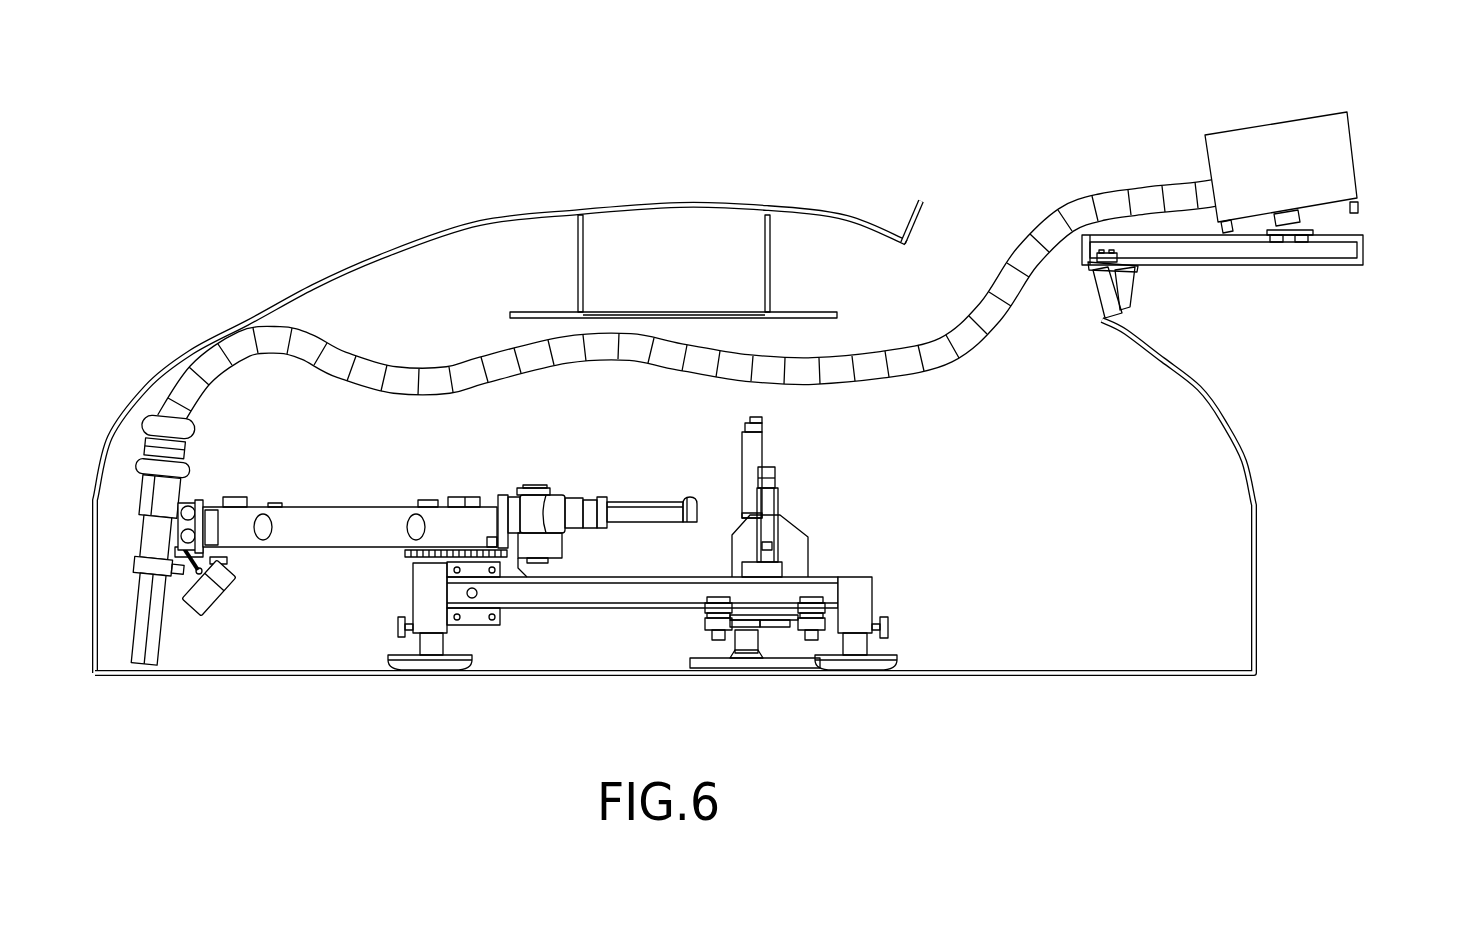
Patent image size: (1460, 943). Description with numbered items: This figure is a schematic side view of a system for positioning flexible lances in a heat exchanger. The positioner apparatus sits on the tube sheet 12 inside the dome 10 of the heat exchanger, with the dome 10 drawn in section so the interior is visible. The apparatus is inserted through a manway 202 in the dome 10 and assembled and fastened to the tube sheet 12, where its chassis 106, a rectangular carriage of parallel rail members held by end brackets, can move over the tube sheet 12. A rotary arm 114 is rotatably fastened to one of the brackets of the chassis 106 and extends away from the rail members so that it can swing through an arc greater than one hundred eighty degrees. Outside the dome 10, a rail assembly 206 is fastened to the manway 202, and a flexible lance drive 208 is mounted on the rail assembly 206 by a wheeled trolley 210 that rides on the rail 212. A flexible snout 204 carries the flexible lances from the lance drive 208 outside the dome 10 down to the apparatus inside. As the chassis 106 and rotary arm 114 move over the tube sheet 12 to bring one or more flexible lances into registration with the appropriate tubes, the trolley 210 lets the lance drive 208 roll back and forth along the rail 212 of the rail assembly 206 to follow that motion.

The dome 10 is at (767, 390).
The tube sheet 12 is at (290, 678).
The chassis 106 is at (832, 560).
The rotary arm 114 is at (320, 515).
The manway 202 is at (910, 210).
The snout 204 is at (300, 327).
The rail assembly 206 is at (1261, 191).
The flexible lance drive 208 is at (1308, 112).
The wheeled trolley 210 is at (1313, 210).
The rail 212 is at (1302, 267).